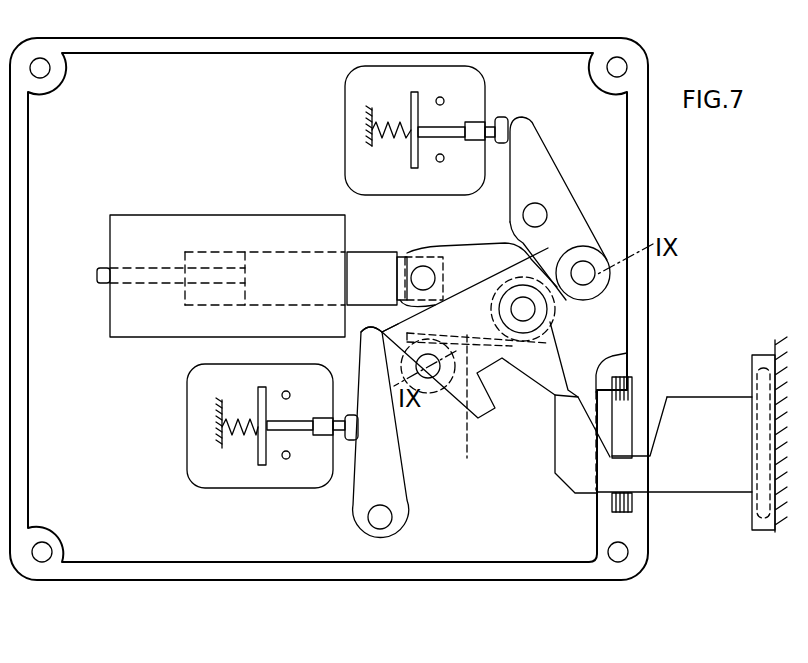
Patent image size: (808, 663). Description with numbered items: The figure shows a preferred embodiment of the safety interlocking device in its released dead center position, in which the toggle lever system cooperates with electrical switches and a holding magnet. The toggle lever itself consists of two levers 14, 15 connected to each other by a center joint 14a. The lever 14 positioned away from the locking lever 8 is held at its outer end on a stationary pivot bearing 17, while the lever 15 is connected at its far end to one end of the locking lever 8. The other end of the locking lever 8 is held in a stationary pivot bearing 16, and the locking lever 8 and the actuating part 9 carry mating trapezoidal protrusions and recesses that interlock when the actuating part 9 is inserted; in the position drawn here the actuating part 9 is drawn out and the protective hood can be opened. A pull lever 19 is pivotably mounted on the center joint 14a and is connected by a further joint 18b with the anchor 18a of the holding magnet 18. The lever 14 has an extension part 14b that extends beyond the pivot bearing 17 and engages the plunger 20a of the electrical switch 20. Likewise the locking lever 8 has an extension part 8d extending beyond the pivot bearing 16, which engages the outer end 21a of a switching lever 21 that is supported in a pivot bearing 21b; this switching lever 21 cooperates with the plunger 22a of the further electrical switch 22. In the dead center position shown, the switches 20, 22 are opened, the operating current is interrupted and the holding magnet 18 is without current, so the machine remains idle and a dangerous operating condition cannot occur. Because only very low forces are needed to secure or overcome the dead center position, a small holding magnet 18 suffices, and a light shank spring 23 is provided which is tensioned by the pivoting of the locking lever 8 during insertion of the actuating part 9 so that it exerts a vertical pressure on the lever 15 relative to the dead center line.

The locking lever 8 is at (553, 363).
The extension part 8d is at (380, 333).
The actuating part 9 is at (700, 418).
The lever 14 is at (590, 191).
The center joint 14a is at (600, 276).
The extension part 14b is at (540, 167).
The lever 15 is at (549, 312).
The stationary pivot bearing 16 is at (428, 379).
The stationary pivot bearing 17 is at (522, 215).
The holding magnet 18 is at (267, 230).
The anchor 18a is at (373, 250).
The joint 18b is at (419, 267).
The pull lever 19 is at (552, 247).
The electrical switch 20 is at (430, 77).
The plunger 20a is at (455, 130).
The switching lever 21 is at (398, 525).
The outer end 21a is at (366, 341).
The pivot bearing 21b is at (374, 521).
The electrical switch 22 is at (305, 478).
The plunger 22a is at (278, 430).
The shank spring 23 is at (469, 411).